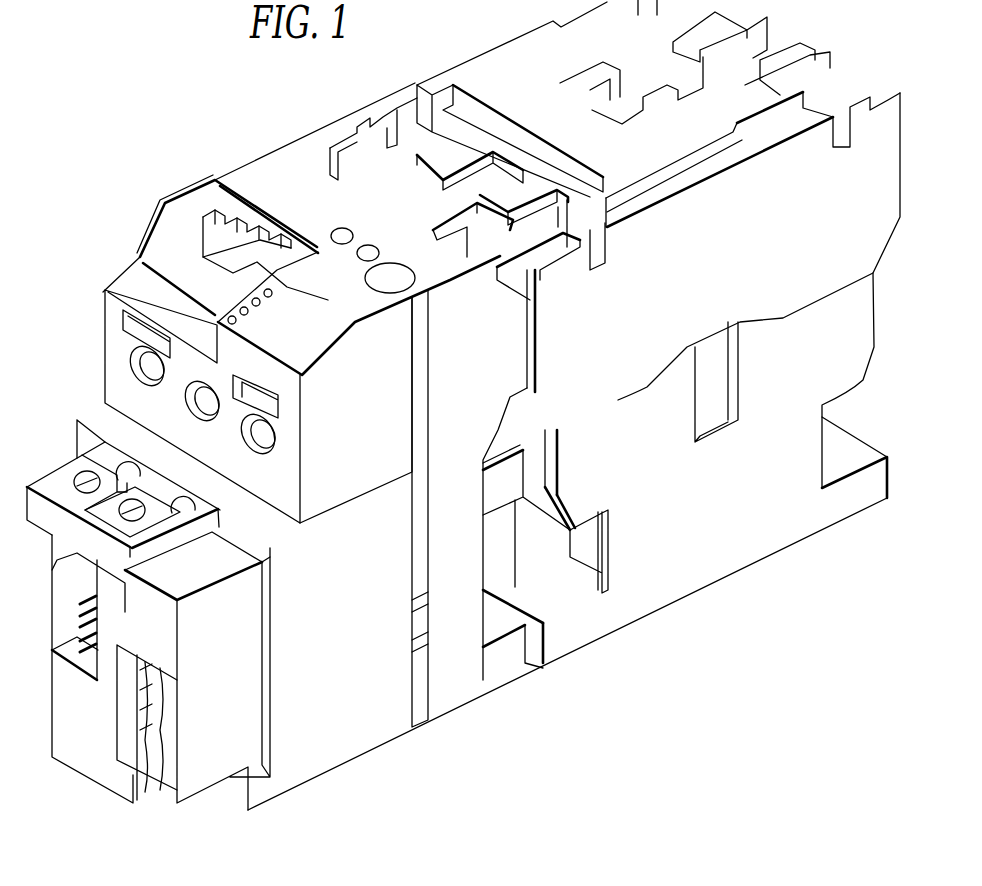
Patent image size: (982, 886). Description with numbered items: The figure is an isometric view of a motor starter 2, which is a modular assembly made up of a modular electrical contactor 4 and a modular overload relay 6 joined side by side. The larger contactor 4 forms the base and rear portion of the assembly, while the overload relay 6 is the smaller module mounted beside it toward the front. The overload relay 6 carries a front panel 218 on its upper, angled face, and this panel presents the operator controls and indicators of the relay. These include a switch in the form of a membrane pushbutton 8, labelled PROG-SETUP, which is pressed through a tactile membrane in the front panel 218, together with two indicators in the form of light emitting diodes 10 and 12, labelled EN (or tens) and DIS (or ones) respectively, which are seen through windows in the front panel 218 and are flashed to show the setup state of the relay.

The motor starter 2 is at (655, 718).
The modular electrical contactor 4 is at (749, 553).
The modular overload relay 6 is at (449, 703).
The membrane pushbutton 8 is at (388, 292).
The light emitting diode 10 is at (335, 244).
The light emitting diode 12 is at (358, 258).
The front panel 218 is at (275, 162).